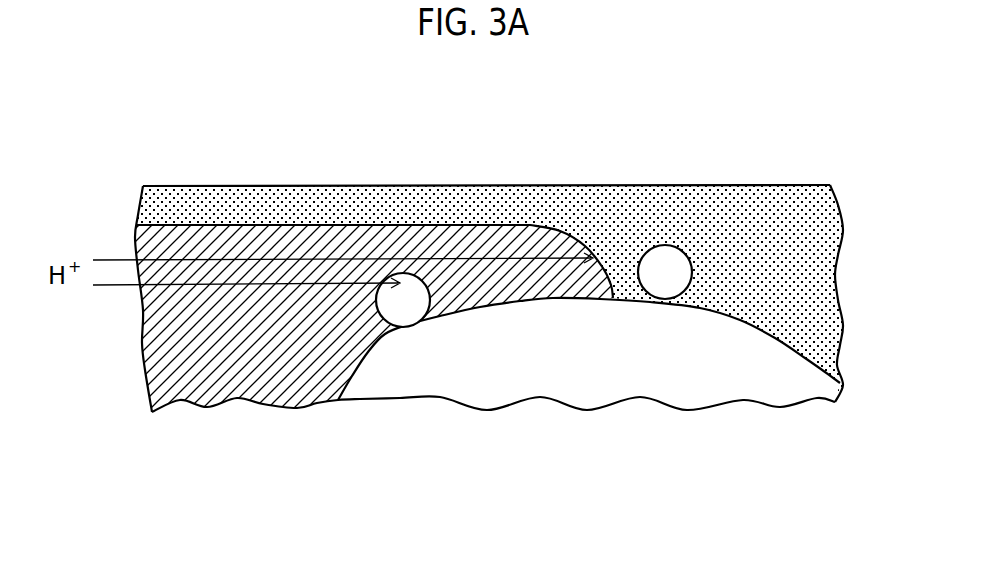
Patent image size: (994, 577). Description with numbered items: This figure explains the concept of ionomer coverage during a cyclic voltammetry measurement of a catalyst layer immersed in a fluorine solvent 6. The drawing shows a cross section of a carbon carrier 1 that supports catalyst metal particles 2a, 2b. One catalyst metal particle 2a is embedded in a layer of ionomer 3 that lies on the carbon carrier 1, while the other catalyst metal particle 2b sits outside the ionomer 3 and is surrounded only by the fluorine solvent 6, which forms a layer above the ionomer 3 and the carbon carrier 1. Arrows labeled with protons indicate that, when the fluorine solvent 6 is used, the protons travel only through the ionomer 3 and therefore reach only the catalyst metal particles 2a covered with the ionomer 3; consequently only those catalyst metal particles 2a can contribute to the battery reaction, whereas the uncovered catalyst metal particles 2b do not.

The carbon carrier 1 is at (812, 375).
The catalyst metal particles 2a is at (408, 317).
The catalyst metal particles 2b is at (667, 258).
The ionomer 3 is at (337, 243).
The fluorine solvent 6 is at (545, 207).